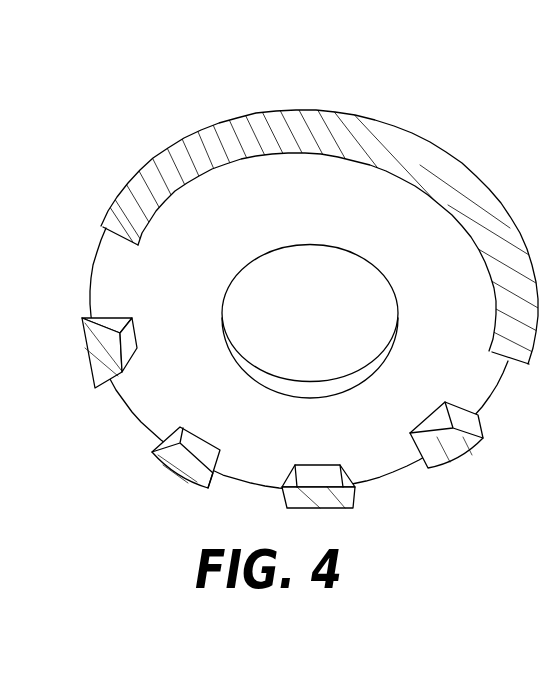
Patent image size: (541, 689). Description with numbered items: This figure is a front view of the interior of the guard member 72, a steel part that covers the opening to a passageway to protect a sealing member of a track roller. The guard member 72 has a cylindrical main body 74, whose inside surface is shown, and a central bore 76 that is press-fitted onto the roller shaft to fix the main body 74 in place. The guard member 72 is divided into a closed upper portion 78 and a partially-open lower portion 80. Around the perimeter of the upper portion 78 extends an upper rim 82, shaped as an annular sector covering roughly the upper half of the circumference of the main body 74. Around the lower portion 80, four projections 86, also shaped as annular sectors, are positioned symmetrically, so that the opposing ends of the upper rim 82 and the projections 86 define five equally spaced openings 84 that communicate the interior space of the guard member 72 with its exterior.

The guard member 72 is at (90, 207).
The main body 74 is at (330, 221).
The bore 76 is at (321, 311).
The upper portion 78 is at (211, 102).
The lower portion 80 is at (158, 494).
The upper rim 82 is at (383, 140).
The openings 84 is at (107, 278).
The projections 86 is at (187, 427).